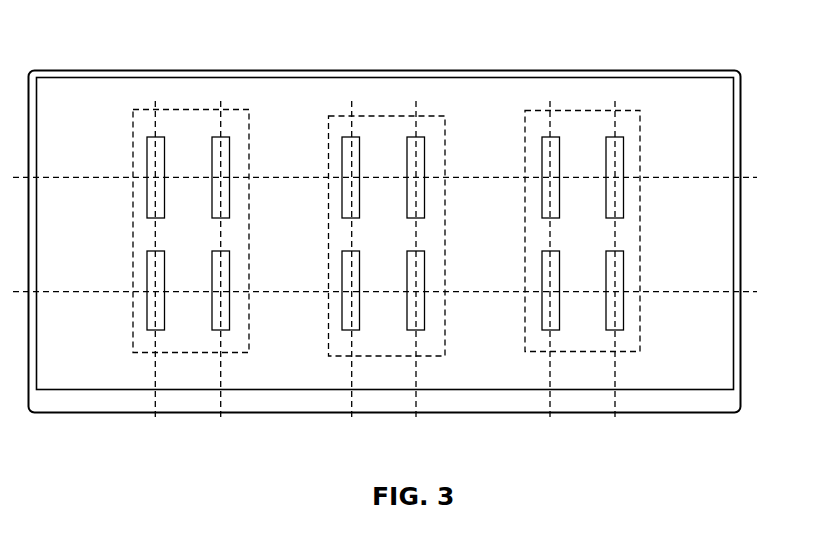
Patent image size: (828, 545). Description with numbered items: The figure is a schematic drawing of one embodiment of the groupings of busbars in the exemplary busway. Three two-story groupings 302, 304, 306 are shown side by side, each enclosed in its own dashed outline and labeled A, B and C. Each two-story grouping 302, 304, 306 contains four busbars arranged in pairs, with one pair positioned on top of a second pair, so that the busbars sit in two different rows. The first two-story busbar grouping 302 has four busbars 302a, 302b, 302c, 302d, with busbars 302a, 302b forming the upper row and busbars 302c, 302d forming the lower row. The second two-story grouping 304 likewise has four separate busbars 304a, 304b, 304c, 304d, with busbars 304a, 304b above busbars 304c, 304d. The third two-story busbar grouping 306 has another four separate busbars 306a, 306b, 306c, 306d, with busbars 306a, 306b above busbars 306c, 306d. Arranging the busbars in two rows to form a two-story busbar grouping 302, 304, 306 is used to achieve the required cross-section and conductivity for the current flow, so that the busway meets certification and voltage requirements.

The two-story busbar grouping 302 is at (133, 226).
The busbar 302a is at (146, 151).
The busbar 302b is at (218, 136).
The busbar 302c is at (149, 332).
The busbar 302d is at (216, 332).
The two-story busbar grouping 304 is at (329, 250).
The busbar 304a is at (348, 136).
The busbar 304b is at (413, 136).
The busbar 304c is at (348, 332).
The busbar 304d is at (413, 332).
The two-story busbar grouping 306 is at (640, 235).
The busbar 306a is at (542, 159).
The busbar 306b is at (624, 143).
The busbar 306c is at (541, 313).
The busbar 306d is at (624, 312).